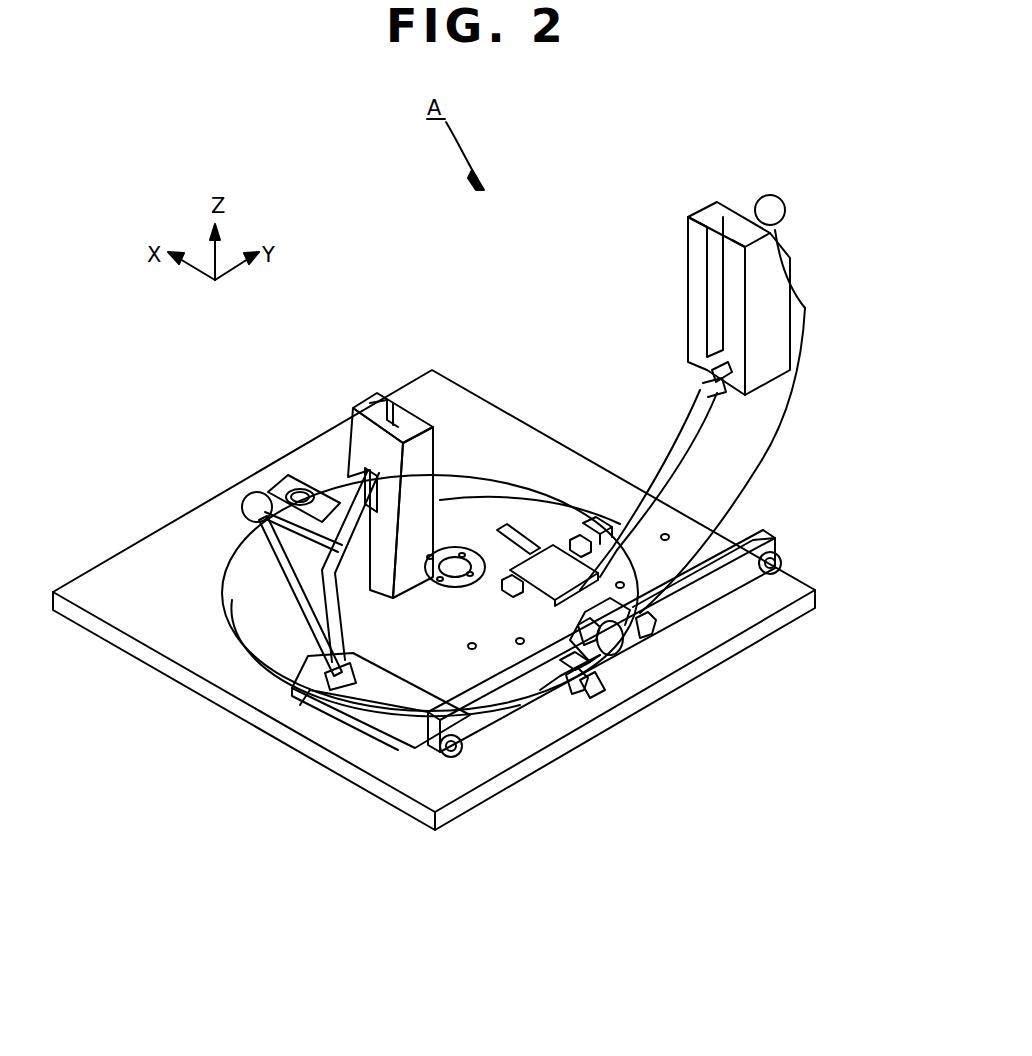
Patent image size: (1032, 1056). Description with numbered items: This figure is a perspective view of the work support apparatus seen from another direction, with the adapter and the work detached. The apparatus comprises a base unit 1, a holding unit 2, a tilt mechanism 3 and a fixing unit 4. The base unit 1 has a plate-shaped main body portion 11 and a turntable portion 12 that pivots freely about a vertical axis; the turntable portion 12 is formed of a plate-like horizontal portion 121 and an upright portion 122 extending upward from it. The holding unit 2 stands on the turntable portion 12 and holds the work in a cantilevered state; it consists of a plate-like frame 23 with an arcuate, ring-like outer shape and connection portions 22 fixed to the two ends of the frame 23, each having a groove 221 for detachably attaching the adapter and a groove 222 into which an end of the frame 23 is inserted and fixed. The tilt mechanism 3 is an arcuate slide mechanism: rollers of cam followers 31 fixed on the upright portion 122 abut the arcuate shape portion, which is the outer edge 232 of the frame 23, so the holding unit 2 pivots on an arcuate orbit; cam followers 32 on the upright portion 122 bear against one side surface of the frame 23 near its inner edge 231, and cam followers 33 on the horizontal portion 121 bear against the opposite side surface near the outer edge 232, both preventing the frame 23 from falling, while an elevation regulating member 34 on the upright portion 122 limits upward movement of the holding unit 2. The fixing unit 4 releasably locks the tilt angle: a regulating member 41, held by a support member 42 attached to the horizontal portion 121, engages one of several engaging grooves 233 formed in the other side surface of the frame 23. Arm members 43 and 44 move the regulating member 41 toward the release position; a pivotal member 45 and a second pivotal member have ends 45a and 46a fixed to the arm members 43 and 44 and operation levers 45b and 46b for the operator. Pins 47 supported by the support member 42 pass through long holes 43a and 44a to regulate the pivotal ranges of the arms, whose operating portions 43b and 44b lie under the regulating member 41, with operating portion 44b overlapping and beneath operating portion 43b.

The base unit 1 is at (165, 710).
The main body portion 11 is at (228, 728).
The turntable portion 12 is at (305, 728).
The holding unit 2 is at (657, 180).
The connection portion 22 is at (376, 405).
The groove 221 is at (398, 405).
The groove 222 is at (374, 478).
The frame 23 is at (737, 443).
The inner edge 231 is at (665, 470).
The arcuate shape portion (outer edge) 232 is at (338, 700).
The engaging groove 233 is at (668, 533).
The horizontal portion 121 is at (556, 498).
The upright portion 122 is at (597, 530).
The tilt mechanism 3 is at (795, 515).
The cam follower 31 is at (715, 538).
The cam follower 32 is at (575, 542).
The cam follower 33 is at (655, 598).
The elevation regulating member 34 is at (548, 560).
The fixing unit 4 is at (420, 792).
The regulating member 41 is at (613, 637).
The support member 42 is at (540, 690).
The arm member 43 is at (487, 738).
The long hole 43a is at (595, 705).
The operating portion 43b is at (595, 655).
The arm member 44 is at (730, 597).
The long hole 44a is at (640, 620).
The operating portion 44b is at (620, 660).
The pivotal member 45 is at (333, 705).
The end 45a is at (455, 760).
The operation lever 45b is at (268, 560).
The end 46a is at (776, 568).
The operation lever 46b is at (787, 220).
The pin 47 is at (645, 640).